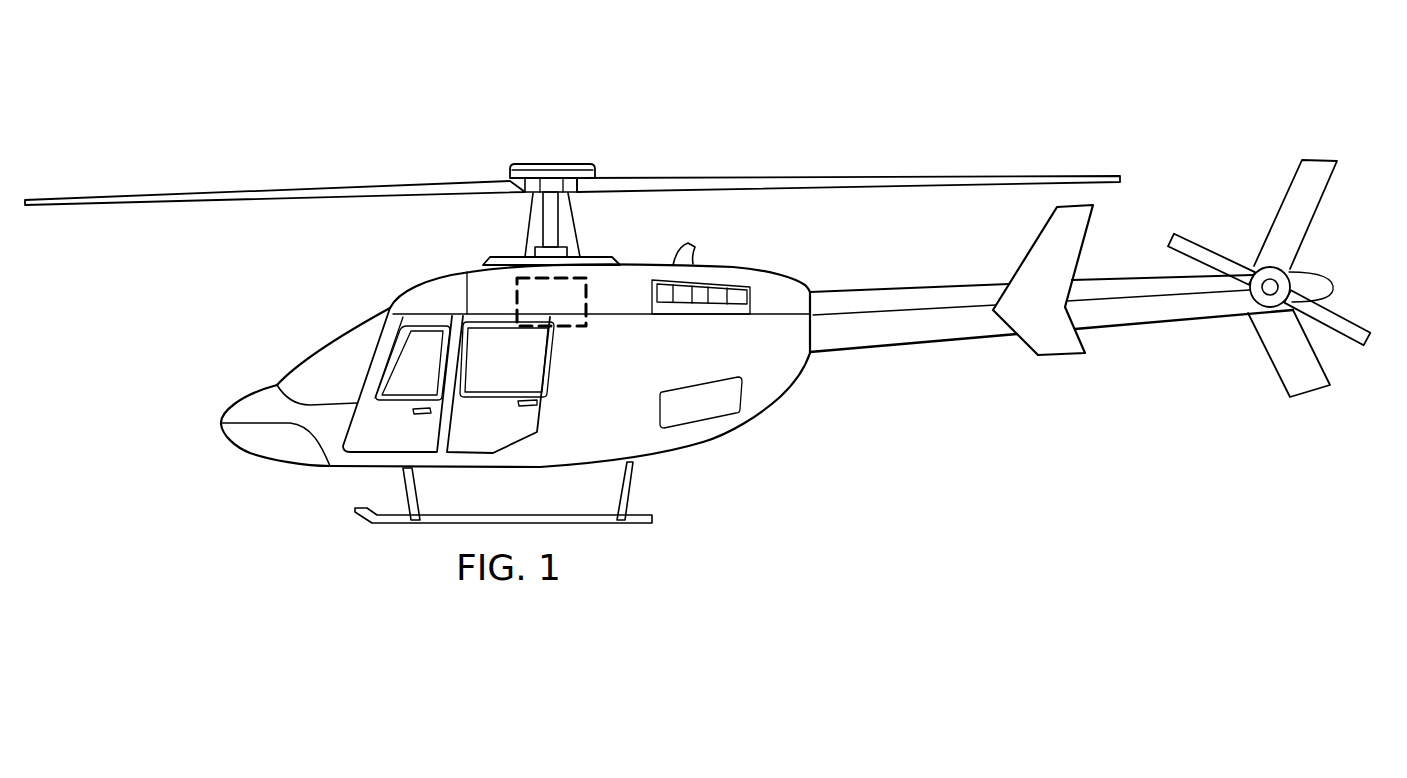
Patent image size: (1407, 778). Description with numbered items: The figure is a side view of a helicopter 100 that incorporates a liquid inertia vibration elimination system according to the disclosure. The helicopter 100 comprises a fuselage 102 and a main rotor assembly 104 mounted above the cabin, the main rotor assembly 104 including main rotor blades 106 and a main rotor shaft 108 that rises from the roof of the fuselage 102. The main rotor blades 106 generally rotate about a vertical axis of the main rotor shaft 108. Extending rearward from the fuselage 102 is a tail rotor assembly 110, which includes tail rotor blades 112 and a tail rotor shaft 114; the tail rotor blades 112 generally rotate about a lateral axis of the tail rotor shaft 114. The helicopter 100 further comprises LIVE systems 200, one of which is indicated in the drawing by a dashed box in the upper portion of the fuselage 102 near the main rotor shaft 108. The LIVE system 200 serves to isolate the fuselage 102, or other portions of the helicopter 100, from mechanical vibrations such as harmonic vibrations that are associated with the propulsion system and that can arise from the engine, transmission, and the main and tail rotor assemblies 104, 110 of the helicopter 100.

The helicopter 100 is at (527, 78).
The fuselage 102 is at (703, 443).
The main rotor assembly 104 is at (508, 225).
The main rotor blades 106 is at (260, 191).
The main rotor shaft 108 is at (560, 228).
The tail rotor assembly 110 is at (1245, 328).
The tail rotor blades 112 is at (1190, 237).
The tail rotor shaft 114 is at (1271, 280).
The LIVE system 200 is at (595, 303).